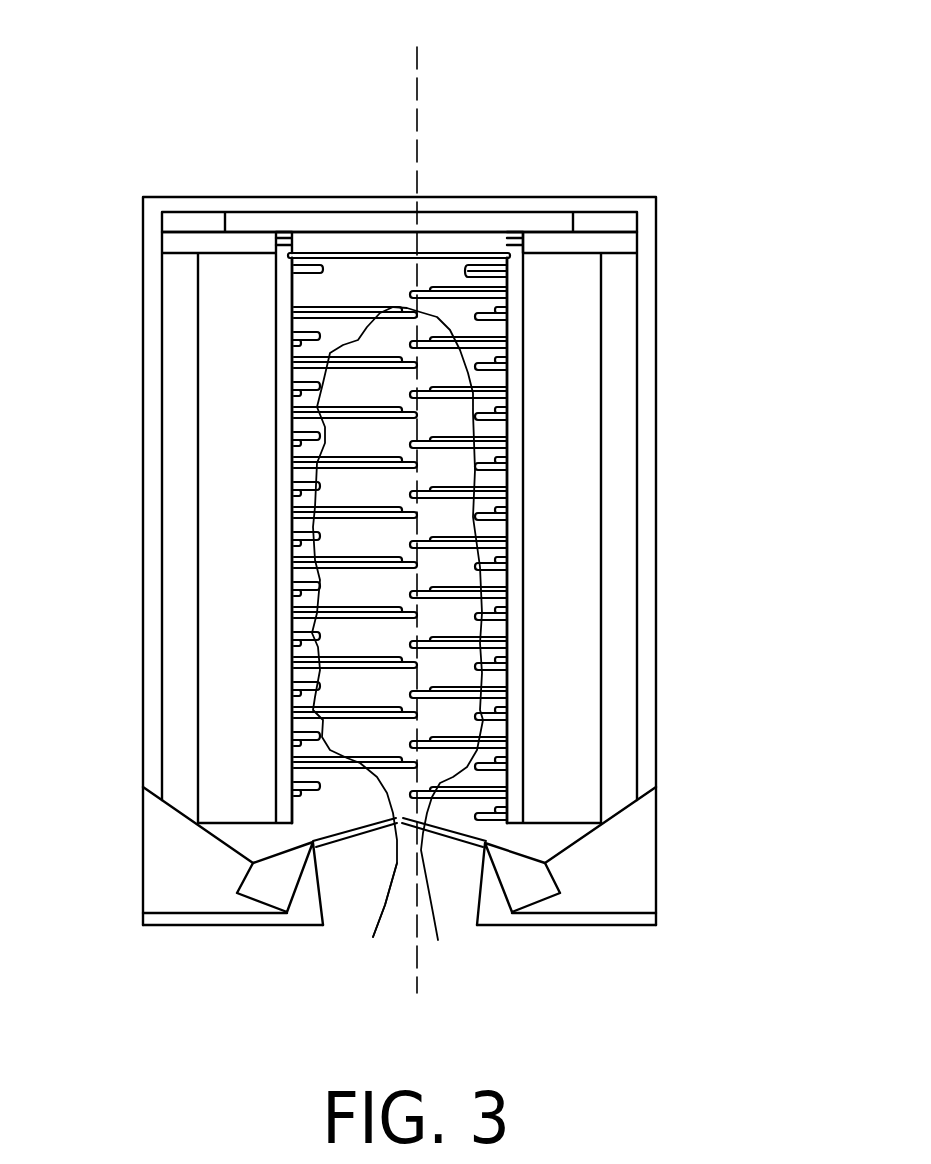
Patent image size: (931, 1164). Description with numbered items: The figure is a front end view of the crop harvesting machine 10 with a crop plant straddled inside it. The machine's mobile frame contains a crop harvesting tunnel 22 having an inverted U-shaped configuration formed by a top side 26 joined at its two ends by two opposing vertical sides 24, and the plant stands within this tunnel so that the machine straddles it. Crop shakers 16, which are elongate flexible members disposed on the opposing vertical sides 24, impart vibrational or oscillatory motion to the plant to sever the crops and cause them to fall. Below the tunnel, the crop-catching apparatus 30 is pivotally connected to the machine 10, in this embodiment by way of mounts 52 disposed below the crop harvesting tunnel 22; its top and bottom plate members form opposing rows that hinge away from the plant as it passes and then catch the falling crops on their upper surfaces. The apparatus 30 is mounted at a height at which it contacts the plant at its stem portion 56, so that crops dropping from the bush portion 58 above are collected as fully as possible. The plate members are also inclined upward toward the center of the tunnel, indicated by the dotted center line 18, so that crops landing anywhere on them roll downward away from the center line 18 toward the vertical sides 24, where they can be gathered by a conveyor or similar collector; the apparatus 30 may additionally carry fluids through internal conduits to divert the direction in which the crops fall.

The crop harvesting machine 10 is at (701, 134).
The crop shakers 16 is at (355, 303).
The dotted center line 18 is at (417, 61).
The crop harvesting tunnel 22 is at (484, 243).
The opposing vertical sides 24 is at (288, 540).
The top side 26 is at (442, 247).
The crop-catching apparatus 30 is at (350, 843).
The mounts 52 is at (180, 890).
The stem portion 56 is at (393, 860).
The bush portion 58 is at (497, 654).